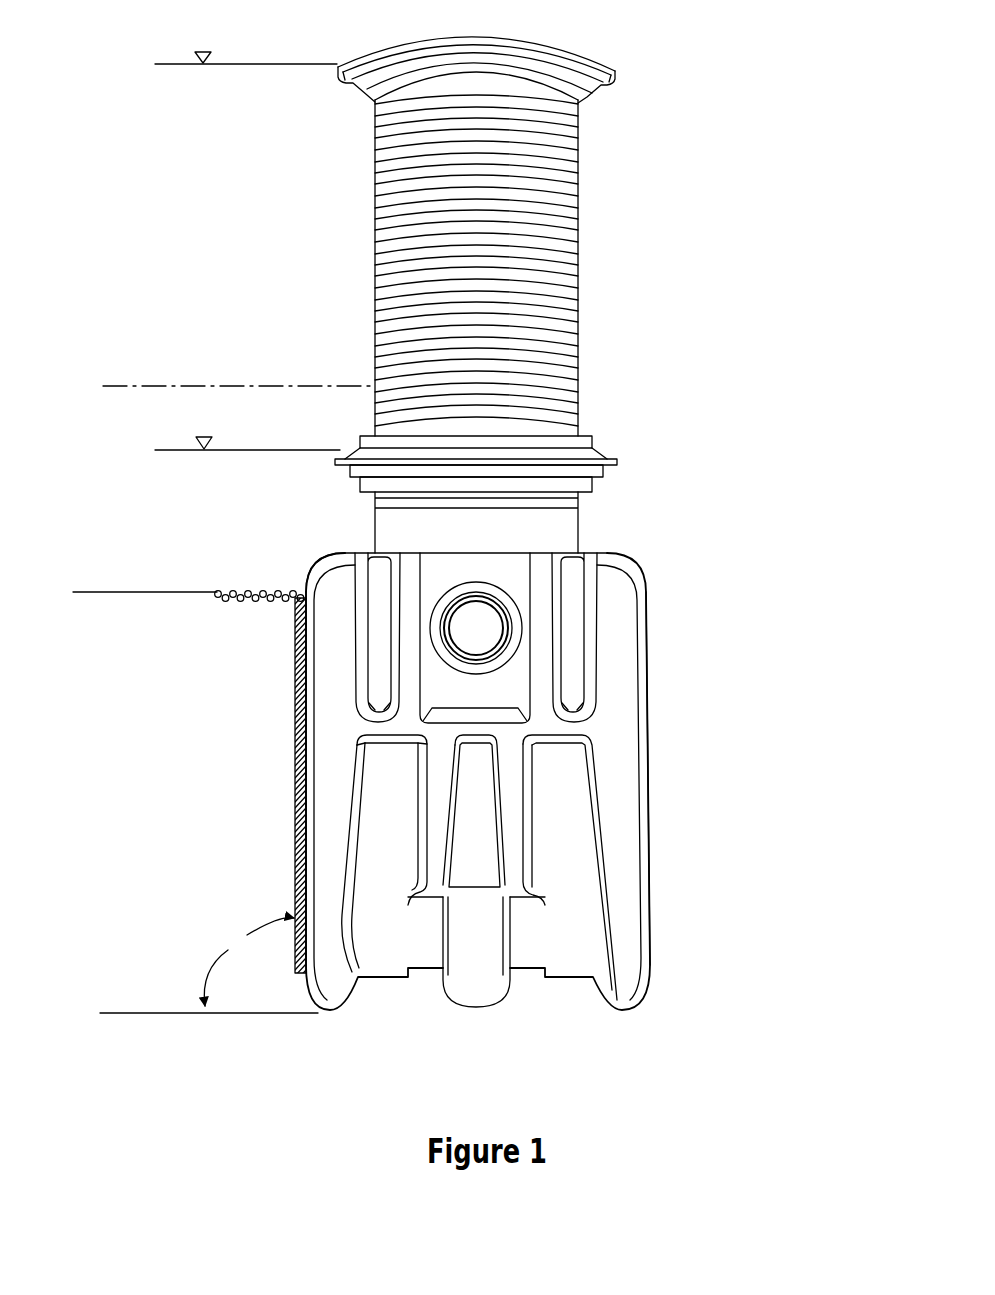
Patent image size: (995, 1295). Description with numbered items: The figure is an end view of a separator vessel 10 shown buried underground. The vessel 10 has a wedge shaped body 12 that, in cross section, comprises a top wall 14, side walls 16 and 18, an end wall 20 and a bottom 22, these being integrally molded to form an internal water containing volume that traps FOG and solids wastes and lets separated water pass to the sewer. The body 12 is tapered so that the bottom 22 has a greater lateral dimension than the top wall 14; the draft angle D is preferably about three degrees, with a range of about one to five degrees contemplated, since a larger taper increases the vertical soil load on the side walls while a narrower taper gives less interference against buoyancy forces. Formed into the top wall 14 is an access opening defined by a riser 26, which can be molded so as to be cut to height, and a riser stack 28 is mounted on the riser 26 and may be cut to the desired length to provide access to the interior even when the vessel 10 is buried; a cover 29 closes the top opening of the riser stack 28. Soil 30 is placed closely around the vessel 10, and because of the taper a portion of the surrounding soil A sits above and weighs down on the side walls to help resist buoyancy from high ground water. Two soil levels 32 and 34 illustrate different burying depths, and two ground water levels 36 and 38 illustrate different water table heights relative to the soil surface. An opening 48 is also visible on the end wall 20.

The separator vessel 10 is at (704, 580).
The wedge shaped body 12 is at (454, 780).
The top wall 14 is at (332, 556).
The side wall 16 is at (297, 795).
The side wall 18 is at (650, 762).
The end wall 20 is at (545, 658).
The bottom 22 is at (487, 1007).
The riser 26 is at (373, 520).
The riser stack 28 is at (580, 380).
The cover 29 is at (578, 46).
The soil 30 is at (250, 600).
The soil level 32 is at (247, 440).
The soil level 34 is at (246, 54).
The ground water level 36 is at (130, 593).
The ground water level 38 is at (223, 387).
The inlet port 48 is at (491, 614).
The portion of surrounding soil A is at (295, 640).
The draft angle D is at (209, 965).